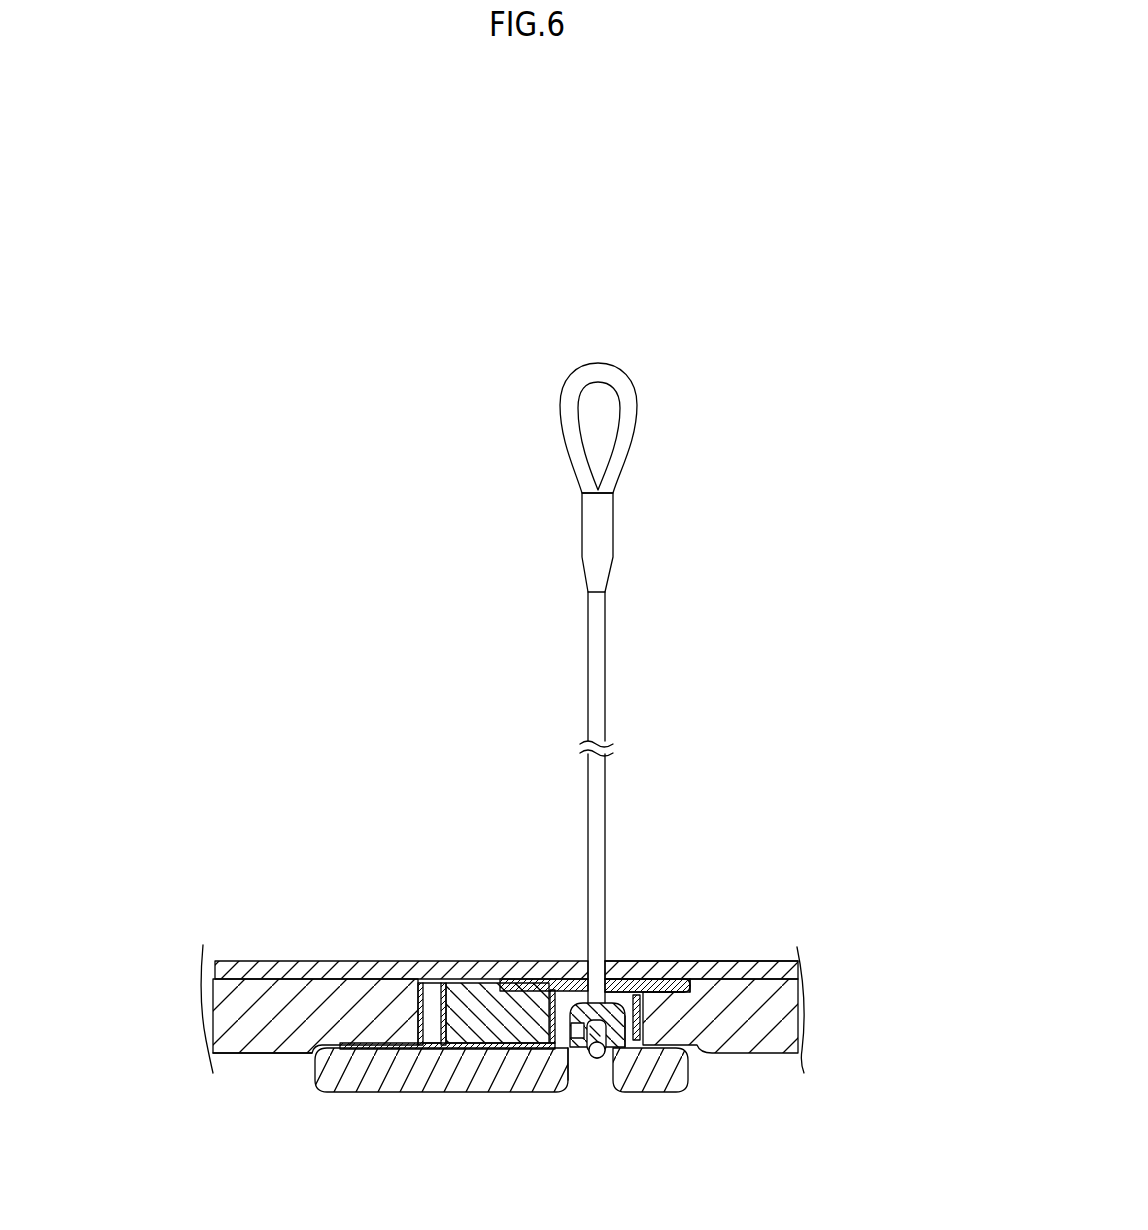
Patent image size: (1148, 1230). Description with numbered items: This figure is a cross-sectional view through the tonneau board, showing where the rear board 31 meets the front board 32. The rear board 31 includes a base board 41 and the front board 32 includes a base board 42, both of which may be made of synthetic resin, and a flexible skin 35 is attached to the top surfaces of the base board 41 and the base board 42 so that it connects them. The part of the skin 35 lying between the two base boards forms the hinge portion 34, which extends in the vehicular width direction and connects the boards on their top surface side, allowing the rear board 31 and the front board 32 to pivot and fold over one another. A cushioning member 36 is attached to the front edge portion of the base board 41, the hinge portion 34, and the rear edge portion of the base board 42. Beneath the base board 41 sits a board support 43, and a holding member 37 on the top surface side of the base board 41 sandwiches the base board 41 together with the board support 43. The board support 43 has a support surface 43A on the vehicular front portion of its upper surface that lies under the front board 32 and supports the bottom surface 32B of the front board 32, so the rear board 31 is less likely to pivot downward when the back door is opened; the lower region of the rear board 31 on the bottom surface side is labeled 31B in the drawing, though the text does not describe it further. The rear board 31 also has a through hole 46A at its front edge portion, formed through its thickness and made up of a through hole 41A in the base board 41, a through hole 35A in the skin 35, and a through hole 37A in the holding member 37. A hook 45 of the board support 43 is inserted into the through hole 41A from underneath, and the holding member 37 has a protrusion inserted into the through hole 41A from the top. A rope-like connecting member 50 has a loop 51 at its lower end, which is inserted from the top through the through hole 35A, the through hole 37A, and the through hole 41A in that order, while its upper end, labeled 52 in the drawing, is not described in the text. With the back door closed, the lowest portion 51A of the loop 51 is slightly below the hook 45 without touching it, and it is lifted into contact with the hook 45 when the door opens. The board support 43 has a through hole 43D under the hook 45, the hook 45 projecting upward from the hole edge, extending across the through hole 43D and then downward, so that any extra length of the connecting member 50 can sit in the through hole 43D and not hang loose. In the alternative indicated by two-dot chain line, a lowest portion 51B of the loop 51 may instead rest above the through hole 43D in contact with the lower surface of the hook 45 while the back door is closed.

The rear board 31 is at (766, 960).
The bottom plate of base member 31B is at (493, 1049).
The front board 32 is at (248, 933).
The bottom surface 32B is at (337, 1092).
The hinge portion 34 is at (431, 990).
The skin 35 is at (281, 960).
The through hole 35A is at (634, 1015).
The cushioning member 36 is at (431, 1047).
The holding member 37 is at (510, 985).
The through hole 37A is at (619, 972).
The base board 41 is at (773, 1048).
The through hole 41A is at (683, 978).
The base board 42 is at (247, 1048).
The board support 43 is at (476, 1082).
The support surface 43A is at (373, 1042).
The through hole 43D is at (575, 1068).
The hook 45 is at (572, 1032).
The through hole 46A is at (792, 822).
The connecting member 50 is at (609, 614).
The loop 51 is at (592, 1064).
The lowest portion 51A is at (599, 1059).
The lowest portion 51B is at (615, 1042).
The pull loop 52 is at (612, 378).